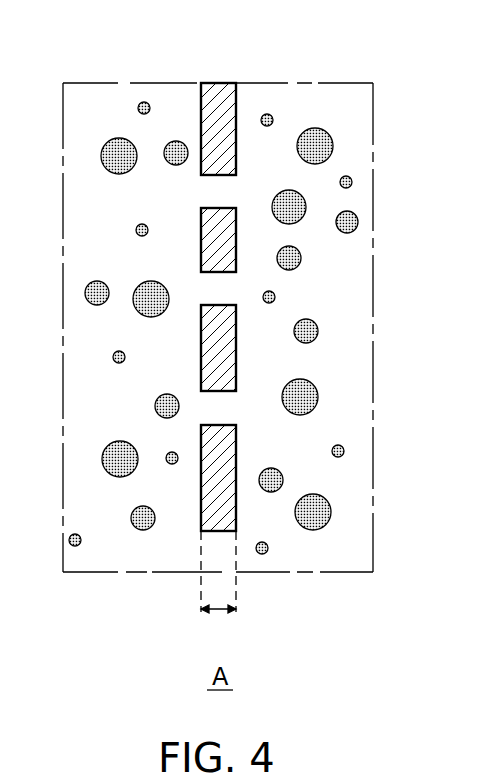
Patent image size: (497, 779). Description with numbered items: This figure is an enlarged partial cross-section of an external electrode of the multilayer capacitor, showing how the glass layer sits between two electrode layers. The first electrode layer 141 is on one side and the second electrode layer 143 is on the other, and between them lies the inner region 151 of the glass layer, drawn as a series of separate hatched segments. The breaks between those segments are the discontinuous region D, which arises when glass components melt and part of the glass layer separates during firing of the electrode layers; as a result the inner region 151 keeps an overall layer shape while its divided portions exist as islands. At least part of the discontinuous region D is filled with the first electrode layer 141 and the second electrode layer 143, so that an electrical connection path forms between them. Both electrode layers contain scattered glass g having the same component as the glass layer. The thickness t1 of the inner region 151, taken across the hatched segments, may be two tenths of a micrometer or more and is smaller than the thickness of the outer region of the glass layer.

The second electrode layer 143 is at (134, 89).
The first electrode layer 141 is at (274, 90).
The inner region 151 is at (221, 90).
The glass g is at (110, 160).
The discontinuous region D is at (222, 201).
The thickness of the inner region t1 is at (218, 586).